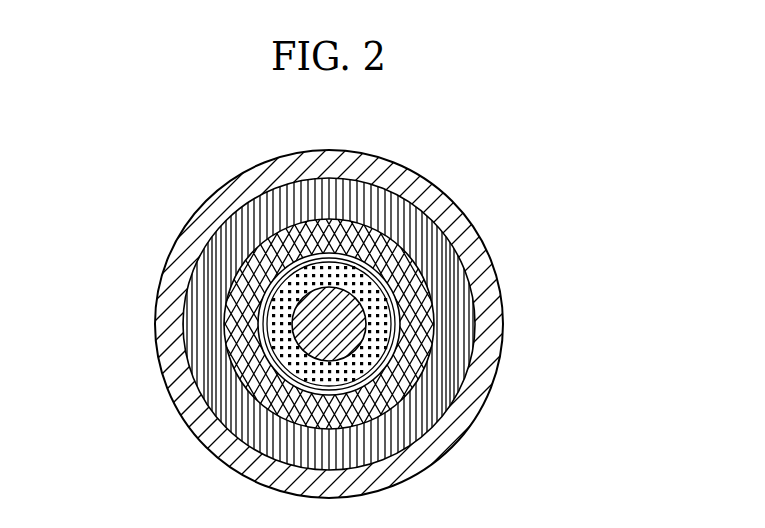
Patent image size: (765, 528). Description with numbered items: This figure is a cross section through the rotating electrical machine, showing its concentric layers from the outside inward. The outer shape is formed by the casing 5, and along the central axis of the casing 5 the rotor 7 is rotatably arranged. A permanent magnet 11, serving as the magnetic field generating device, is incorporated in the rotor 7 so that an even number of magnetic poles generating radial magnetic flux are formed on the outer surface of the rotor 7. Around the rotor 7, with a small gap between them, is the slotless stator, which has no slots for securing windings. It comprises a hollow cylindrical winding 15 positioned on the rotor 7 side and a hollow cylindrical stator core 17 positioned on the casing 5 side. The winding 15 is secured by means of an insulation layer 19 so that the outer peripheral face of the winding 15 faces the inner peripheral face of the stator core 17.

The casing 5 is at (250, 155).
The stator core 17 is at (172, 314).
The winding 15 is at (241, 248).
The insulation layer 19 is at (245, 372).
The permanent magnet 11 is at (355, 264).
The rotor 7 is at (392, 336).